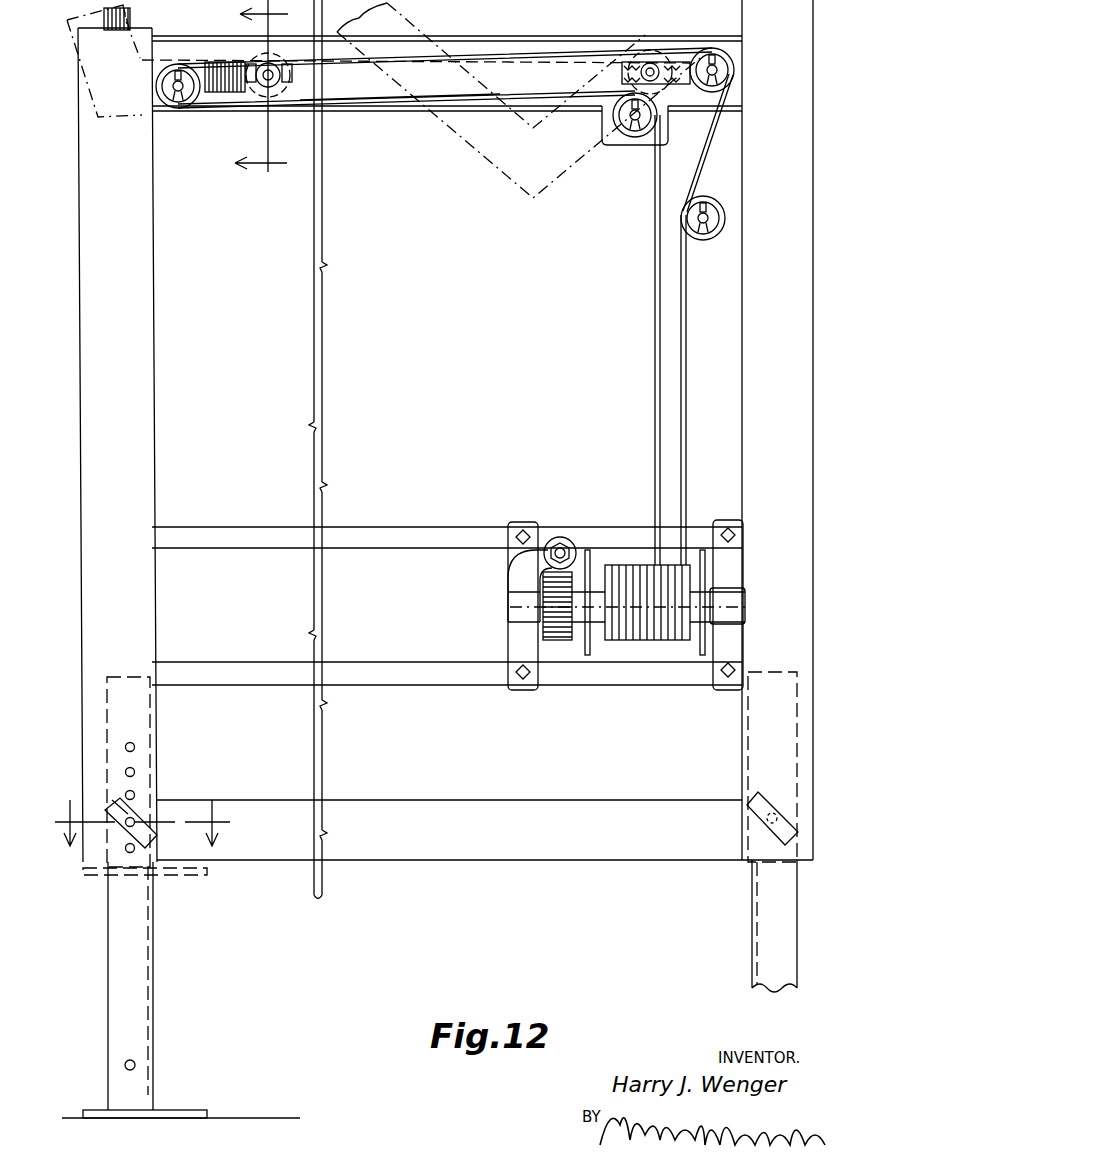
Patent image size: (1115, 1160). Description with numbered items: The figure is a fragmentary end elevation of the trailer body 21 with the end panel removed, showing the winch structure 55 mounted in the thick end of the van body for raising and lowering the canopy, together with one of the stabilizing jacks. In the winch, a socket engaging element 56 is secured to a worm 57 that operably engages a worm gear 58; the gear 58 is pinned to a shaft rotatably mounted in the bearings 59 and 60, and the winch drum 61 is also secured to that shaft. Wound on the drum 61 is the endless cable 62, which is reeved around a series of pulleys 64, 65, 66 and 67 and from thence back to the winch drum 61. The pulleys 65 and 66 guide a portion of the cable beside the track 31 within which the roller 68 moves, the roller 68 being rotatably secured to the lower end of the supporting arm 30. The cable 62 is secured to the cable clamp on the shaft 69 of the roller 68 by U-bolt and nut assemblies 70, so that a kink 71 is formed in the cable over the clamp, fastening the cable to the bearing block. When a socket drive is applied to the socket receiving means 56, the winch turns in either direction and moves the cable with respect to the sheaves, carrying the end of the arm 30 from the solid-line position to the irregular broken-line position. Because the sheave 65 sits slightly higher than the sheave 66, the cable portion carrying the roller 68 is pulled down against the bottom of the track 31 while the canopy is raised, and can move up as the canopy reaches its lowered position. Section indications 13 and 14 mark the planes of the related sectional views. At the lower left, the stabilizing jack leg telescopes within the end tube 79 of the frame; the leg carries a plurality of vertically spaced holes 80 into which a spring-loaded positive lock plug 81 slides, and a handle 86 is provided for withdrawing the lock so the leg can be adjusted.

The section line 13- 13 is at (246, 101).
The section line 14- 14 is at (146, 807).
The trailer body 21 is at (813, 327).
The supporting arm 30 is at (135, 18).
The track 31 is at (366, 84).
The winch structure 55 is at (638, 652).
The socket engaging element 56 is at (560, 545).
The worm 57 is at (570, 540).
The worm gear 58 is at (562, 642).
The bearing 59 is at (740, 587).
The bearing 60 is at (508, 614).
The winch drum 61 is at (692, 642).
The endless cable 62 is at (686, 360).
The pulley 64 is at (710, 196).
The pulley 65 is at (724, 48).
The pulley 66 is at (160, 85).
The pulley 67 is at (637, 135).
The roller 68 is at (248, 88).
The shaft of the roller 69 is at (260, 88).
The U-bolt and nut assemblies 70 is at (215, 115).
The kink 71 is at (272, 58).
The end tube 79 is at (150, 930).
The holes 80 is at (133, 741).
The positive lock plug 81 is at (140, 812).
The handle 86 is at (130, 805).